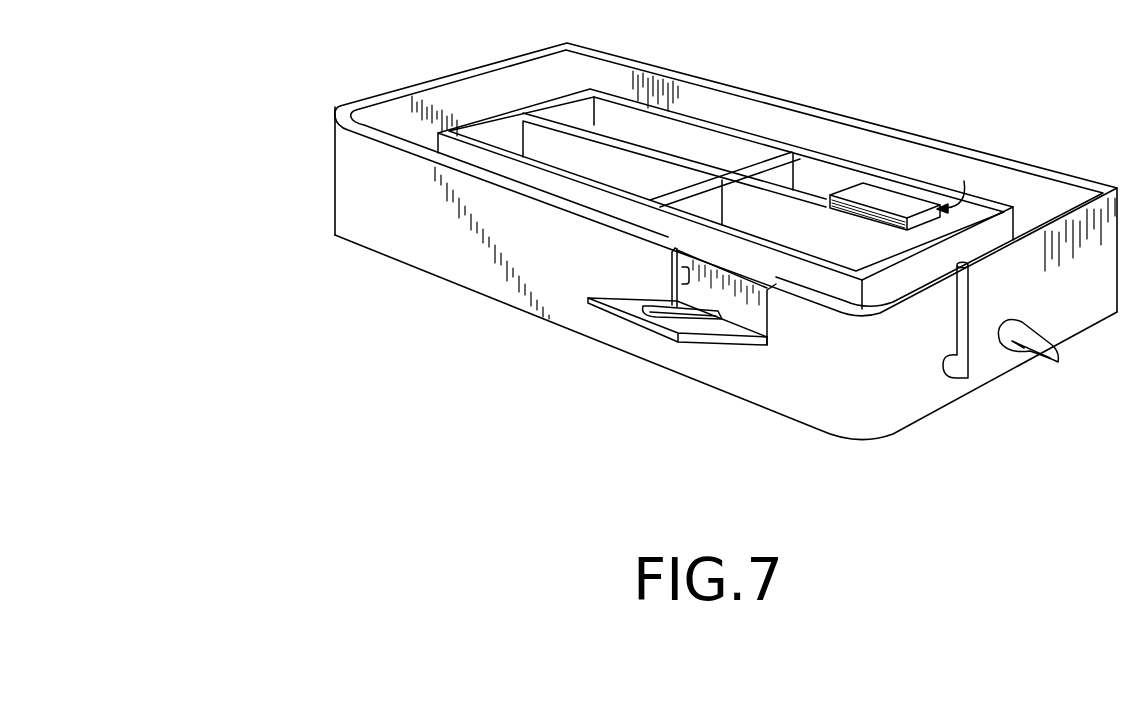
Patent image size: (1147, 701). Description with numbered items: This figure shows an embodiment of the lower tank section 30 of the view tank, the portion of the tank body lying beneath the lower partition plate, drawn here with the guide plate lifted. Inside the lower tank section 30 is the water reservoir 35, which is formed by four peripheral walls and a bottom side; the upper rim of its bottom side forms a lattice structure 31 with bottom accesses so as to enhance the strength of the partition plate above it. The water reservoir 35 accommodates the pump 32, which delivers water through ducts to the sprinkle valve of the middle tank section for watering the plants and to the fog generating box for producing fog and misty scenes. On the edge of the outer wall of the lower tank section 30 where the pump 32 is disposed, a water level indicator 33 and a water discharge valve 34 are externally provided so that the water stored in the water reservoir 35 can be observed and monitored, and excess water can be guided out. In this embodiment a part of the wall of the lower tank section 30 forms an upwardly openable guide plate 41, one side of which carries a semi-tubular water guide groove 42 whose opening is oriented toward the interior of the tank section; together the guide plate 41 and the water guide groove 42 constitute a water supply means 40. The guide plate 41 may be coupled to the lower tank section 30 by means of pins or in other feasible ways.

The lower tank section 30 is at (327, 162).
The lattice structure 31 is at (740, 203).
The pump 32 is at (887, 187).
The water level indicator 33 is at (967, 300).
The water discharge valve 34 is at (1047, 362).
The water reservoir 35 is at (573, 115).
The water supply means 40 is at (667, 353).
The guide plate 41 is at (707, 332).
The water guide groove 42 is at (665, 307).